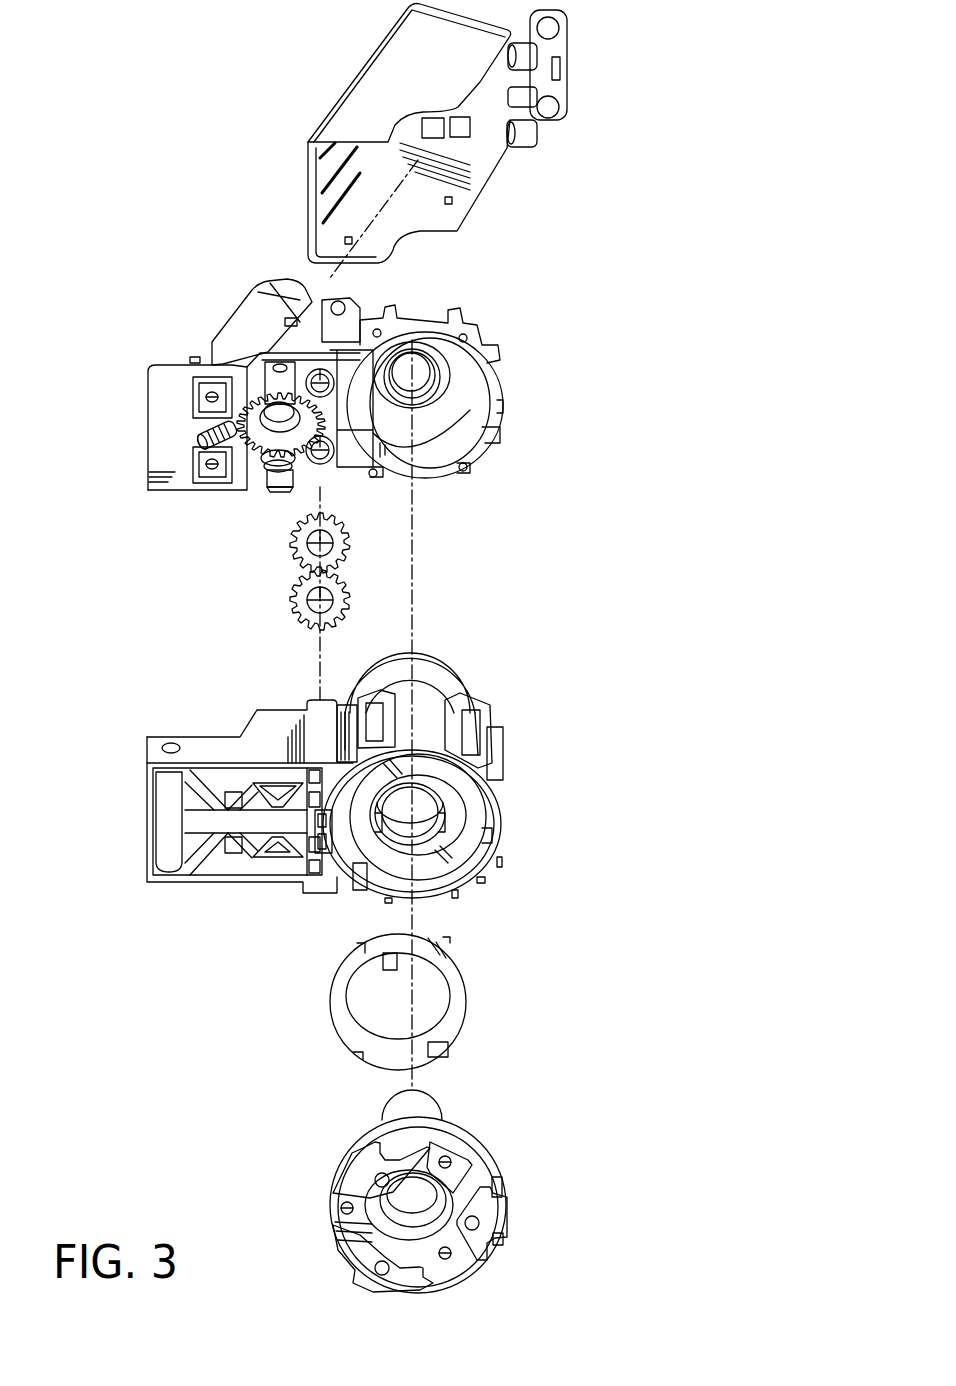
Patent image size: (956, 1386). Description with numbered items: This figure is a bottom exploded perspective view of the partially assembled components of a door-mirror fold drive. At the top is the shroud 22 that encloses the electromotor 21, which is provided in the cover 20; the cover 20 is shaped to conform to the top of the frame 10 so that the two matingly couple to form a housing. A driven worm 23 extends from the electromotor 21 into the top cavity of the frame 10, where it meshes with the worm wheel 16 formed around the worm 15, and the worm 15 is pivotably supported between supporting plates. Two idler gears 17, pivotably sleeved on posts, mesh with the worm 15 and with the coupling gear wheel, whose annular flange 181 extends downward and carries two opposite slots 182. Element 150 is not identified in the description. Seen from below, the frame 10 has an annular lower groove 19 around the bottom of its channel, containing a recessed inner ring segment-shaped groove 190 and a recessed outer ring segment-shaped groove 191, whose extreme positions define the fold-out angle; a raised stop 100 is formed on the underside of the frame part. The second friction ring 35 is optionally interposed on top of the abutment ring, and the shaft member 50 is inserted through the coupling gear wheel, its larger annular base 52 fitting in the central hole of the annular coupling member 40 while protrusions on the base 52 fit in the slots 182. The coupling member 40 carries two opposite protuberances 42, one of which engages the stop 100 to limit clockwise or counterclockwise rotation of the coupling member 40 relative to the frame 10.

The frame 10 is at (377, 793).
The worm 15 is at (283, 467).
The worm wheel 16 is at (262, 455).
The idler gears 17 is at (340, 519).
The annular lower groove 19 is at (463, 802).
The cover 20 is at (497, 408).
The electromotor 21 is at (232, 318).
The shroud 22 is at (363, 95).
The driven worm 23 is at (197, 437).
The second friction ring 35 is at (460, 1008).
The annular coupling member 40 is at (432, 1203).
The protuberances 42 is at (503, 1193).
The shaft member 50 is at (435, 1112).
The annular base 52 is at (378, 1213).
The raised stop 100 is at (325, 850).
The lower shaft 150 is at (265, 478).
The annular flange 181 is at (420, 837).
The slots 182 is at (540, 841).
The inner ring segment-shaped groove 190 is at (360, 788).
The outer ring segment-shaped groove 191 is at (463, 853).